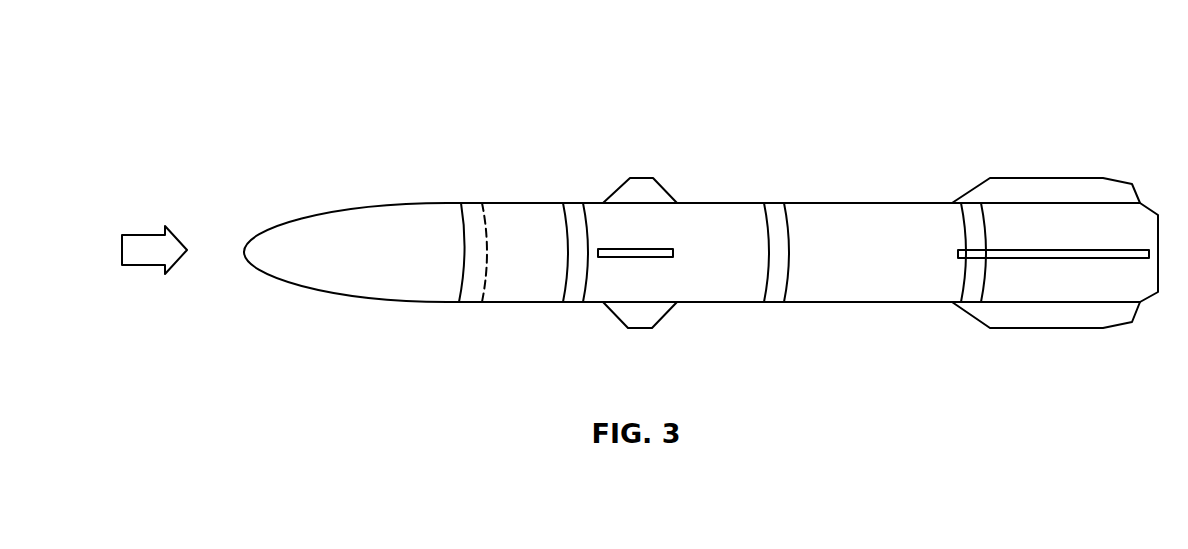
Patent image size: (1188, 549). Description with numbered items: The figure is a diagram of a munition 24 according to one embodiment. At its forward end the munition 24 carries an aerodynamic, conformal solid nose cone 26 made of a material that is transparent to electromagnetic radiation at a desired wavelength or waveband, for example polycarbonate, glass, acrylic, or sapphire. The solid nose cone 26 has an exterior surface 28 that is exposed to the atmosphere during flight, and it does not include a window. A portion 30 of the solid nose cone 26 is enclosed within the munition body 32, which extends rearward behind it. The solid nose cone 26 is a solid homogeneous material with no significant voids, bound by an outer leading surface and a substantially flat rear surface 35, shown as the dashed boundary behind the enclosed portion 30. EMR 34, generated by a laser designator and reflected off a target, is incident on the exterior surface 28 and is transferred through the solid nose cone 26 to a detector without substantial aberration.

The munition 24 is at (701, 196).
The solid nose cone 26 is at (383, 253).
The exterior surface 28 is at (350, 198).
The portion 30 is at (470, 218).
The munition body 32 is at (832, 203).
The EMR 34 is at (142, 235).
The rear surface 35 is at (485, 233).